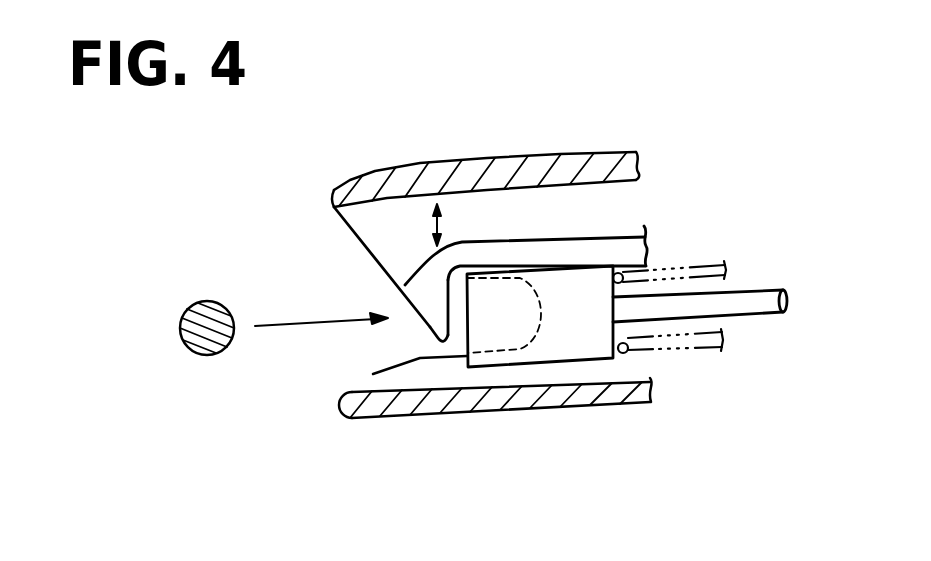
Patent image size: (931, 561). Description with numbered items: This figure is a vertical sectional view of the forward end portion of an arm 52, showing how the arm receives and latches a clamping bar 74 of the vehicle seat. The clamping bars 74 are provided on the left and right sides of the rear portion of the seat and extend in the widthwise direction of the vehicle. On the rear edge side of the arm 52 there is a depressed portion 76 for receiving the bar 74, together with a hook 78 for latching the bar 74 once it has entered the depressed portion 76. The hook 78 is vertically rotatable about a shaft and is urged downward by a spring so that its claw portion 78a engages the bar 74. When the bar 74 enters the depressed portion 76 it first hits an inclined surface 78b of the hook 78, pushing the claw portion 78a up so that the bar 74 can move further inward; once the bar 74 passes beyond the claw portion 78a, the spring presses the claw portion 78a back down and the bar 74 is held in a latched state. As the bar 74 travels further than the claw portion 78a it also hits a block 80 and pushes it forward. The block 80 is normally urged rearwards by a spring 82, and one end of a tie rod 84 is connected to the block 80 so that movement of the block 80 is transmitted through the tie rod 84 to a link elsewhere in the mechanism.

The arm 52 is at (556, 158).
The clamping bar 74 is at (215, 349).
The depressed portion 76 is at (378, 371).
The hook 78 is at (405, 264).
The claw portion 78a is at (420, 303).
The inclined surface 78b is at (413, 326).
The block 80 is at (557, 352).
The spring 82 is at (697, 350).
The tie rod 84 is at (750, 310).